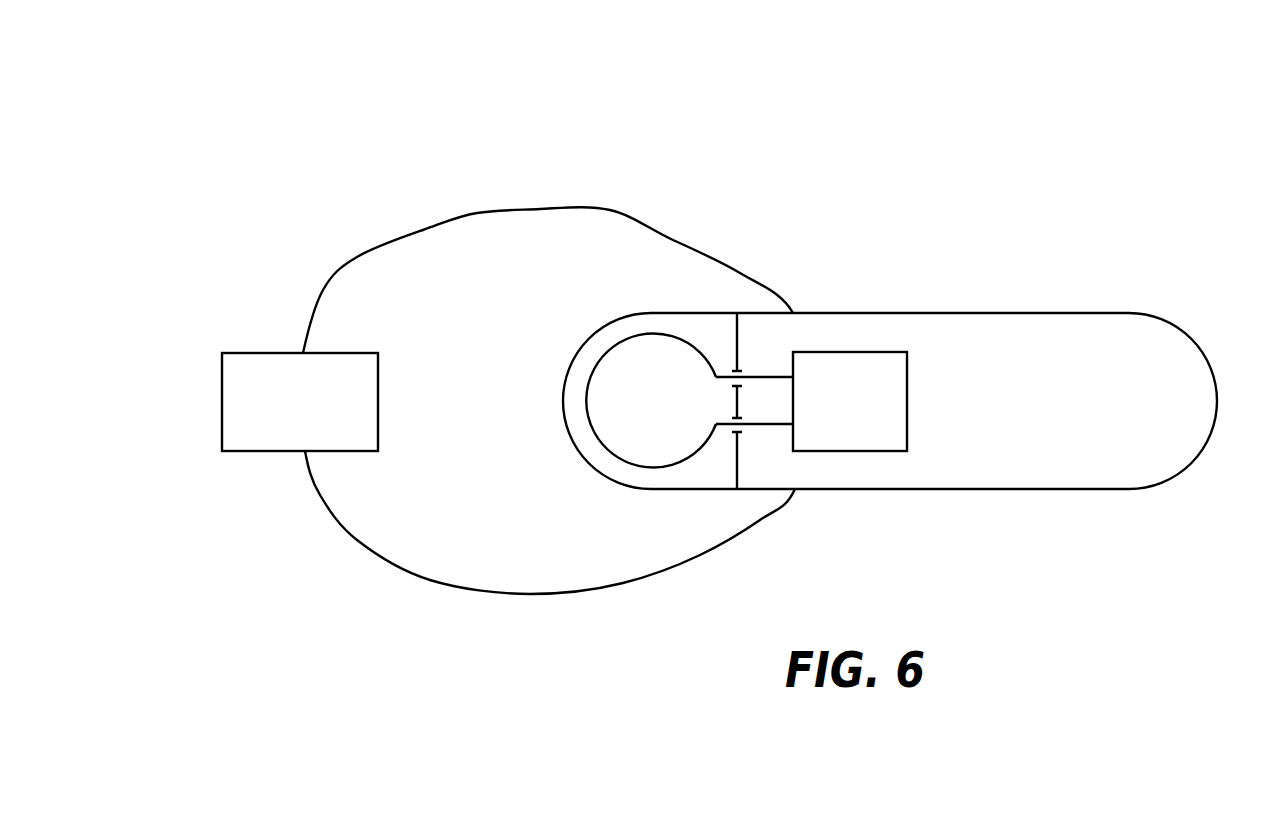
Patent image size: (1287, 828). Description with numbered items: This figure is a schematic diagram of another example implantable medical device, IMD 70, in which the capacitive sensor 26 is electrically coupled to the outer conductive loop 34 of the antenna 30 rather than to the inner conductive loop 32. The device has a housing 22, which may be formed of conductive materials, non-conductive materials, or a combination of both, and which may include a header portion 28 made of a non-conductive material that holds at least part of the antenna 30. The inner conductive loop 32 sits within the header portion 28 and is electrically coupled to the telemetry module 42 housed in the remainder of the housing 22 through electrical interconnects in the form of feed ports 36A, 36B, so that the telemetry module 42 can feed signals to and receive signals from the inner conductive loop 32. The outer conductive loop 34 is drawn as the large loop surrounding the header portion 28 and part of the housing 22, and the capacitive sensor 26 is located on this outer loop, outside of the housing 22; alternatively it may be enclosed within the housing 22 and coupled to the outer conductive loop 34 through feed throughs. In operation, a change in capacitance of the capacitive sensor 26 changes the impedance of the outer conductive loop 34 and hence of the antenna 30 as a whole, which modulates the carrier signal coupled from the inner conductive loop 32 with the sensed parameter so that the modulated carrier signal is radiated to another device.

The housing 22 is at (1015, 313).
The capacitive sensor 26 is at (318, 443).
The header portion 28 is at (590, 335).
The antenna 30 is at (753, 216).
The inner conductive loop 32 is at (587, 407).
The outer conductive loop 34 is at (475, 212).
The feed port 36A is at (748, 358).
The feed port 36B is at (748, 447).
The telemetry module 42 is at (836, 442).
The IMD 70 is at (988, 115).